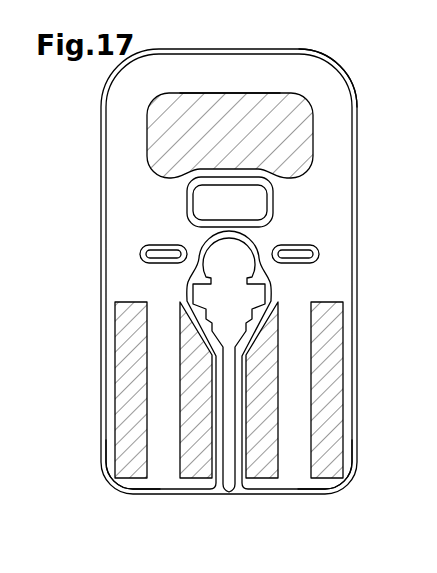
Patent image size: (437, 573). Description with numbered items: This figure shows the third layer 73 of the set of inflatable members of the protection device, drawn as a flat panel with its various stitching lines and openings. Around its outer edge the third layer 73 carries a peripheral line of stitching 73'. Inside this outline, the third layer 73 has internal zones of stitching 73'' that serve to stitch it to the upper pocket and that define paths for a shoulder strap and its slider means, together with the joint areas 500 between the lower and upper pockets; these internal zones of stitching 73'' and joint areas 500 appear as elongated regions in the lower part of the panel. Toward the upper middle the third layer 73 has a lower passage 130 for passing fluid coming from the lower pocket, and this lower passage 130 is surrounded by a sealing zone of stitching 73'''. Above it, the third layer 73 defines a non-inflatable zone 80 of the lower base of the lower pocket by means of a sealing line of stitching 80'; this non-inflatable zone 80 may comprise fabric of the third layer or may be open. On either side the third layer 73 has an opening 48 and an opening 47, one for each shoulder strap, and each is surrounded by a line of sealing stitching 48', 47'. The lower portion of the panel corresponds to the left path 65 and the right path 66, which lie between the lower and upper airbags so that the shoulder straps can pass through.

The third layer 73 is at (264, 271).
The peripheral line of stitching 73' is at (338, 69).
The internal zones of stitching 73'' is at (227, 390).
The sealing zone of stitching 73''' is at (162, 197).
The non-inflatable zone 80 is at (271, 126).
The sealing line of stitching 80' is at (234, 53).
The lower passage 130 is at (248, 203).
The opening 48 is at (120, 268).
The line of sealing stitching 48' is at (117, 239).
The opening 47 is at (339, 288).
The line of sealing stitching 47' is at (347, 272).
The joint areas 500 is at (190, 347).
The right path 66 is at (167, 477).
The left path 65 is at (296, 473).